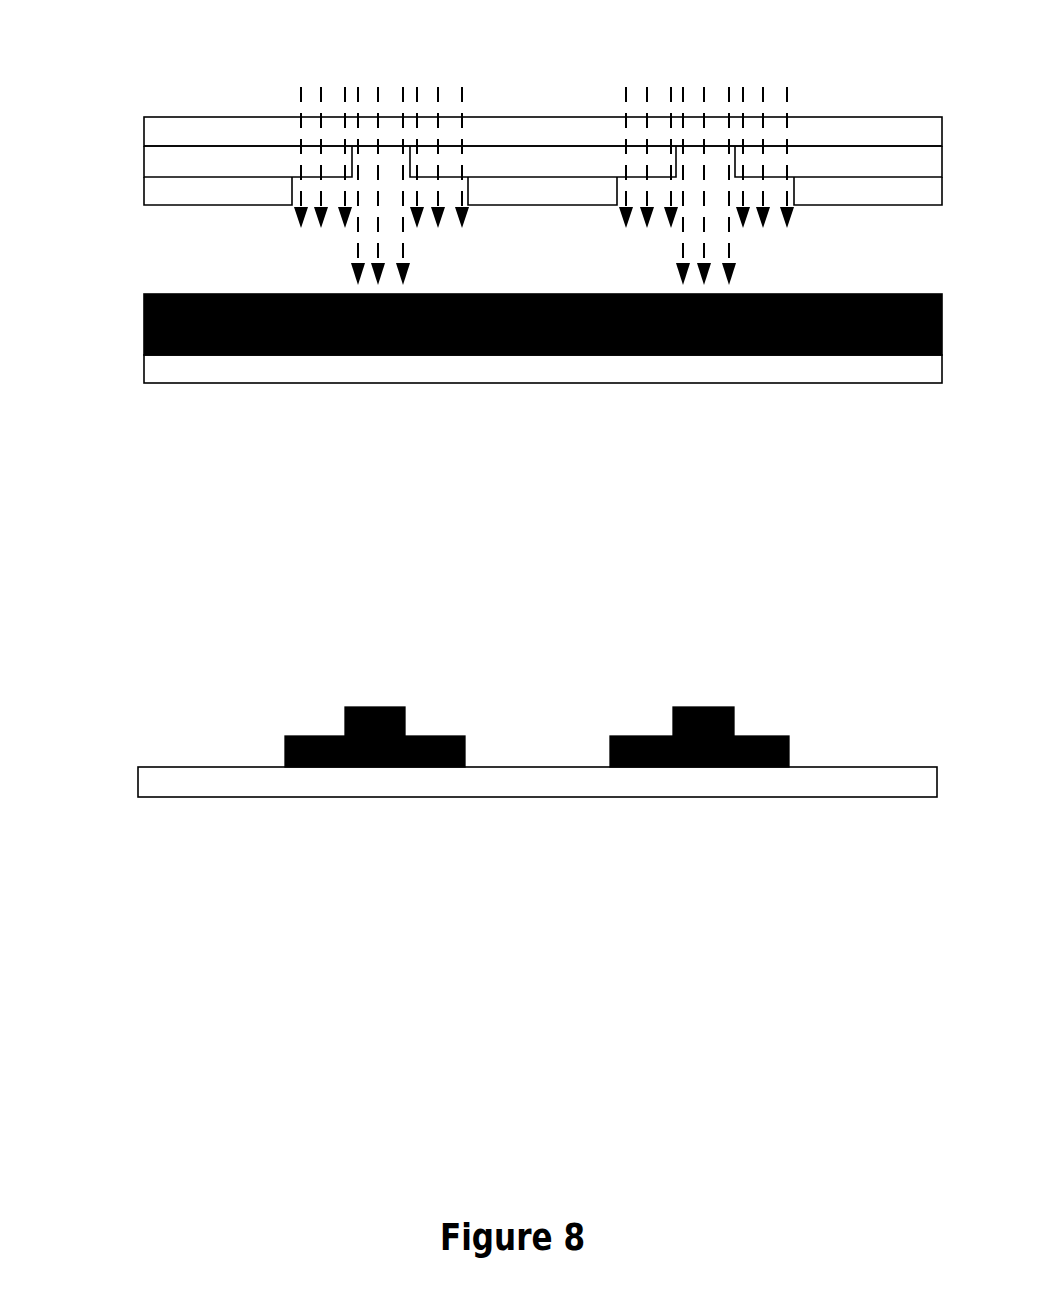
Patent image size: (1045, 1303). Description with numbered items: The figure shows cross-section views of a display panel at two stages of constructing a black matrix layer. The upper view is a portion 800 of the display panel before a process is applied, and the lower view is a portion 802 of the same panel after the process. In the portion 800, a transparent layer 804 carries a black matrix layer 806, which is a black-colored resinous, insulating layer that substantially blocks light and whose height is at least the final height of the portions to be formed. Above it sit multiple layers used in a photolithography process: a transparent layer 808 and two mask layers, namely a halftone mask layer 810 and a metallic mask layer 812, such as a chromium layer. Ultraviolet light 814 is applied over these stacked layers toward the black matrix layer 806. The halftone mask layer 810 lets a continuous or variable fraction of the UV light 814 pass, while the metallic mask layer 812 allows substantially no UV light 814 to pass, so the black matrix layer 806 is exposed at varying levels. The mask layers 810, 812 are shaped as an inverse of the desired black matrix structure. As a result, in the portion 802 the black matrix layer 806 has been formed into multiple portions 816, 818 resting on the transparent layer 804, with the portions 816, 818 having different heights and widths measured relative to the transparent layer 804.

The portion of a display panel 800 is at (180, 38).
The portion of the display panel 802 is at (200, 622).
The transparent layer 804 is at (144, 370).
The black matrix layer 806 is at (144, 325).
The transparent layer 808 is at (144, 127).
The halftone mask layer 810 is at (144, 155).
The metallic mask layer 812 is at (144, 185).
The ultraviolet (UV) light 814 is at (371, 67).
The portion of the black matrix layer 816 is at (345, 707).
The portion of the black matrix layer 818 is at (285, 736).